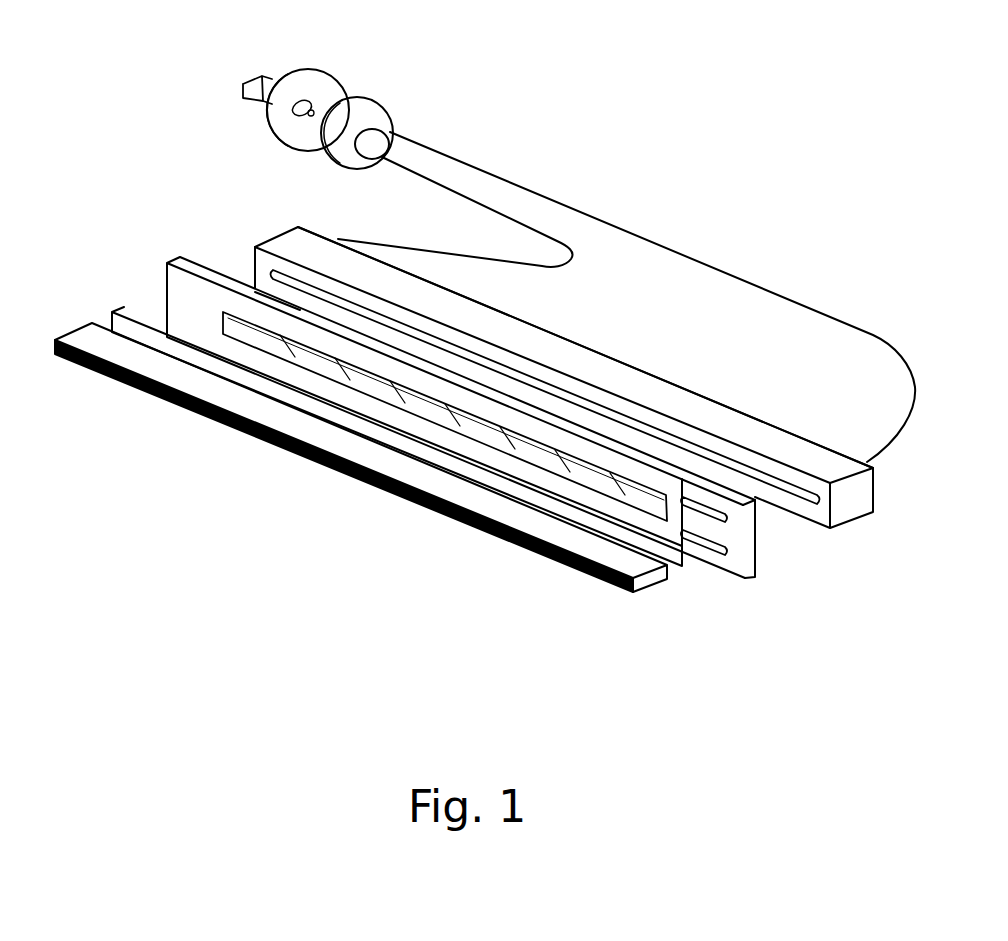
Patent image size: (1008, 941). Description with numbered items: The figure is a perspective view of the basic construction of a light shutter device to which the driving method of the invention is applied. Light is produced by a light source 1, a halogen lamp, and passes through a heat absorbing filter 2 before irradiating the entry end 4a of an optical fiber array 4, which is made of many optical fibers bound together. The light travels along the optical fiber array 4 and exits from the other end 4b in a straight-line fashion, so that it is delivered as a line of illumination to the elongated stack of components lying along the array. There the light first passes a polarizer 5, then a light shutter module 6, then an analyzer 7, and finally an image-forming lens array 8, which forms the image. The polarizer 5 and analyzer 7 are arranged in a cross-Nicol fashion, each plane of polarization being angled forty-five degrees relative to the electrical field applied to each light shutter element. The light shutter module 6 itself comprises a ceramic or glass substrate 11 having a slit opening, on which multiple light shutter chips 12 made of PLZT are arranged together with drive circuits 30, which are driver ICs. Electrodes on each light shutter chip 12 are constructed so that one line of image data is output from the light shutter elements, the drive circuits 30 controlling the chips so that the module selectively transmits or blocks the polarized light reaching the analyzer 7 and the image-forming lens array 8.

The light source 1 is at (297, 112).
The heat absorbing filter 2 is at (363, 100).
The optical fiber array 4 is at (720, 272).
The entry end 4a is at (370, 153).
The other end 4b is at (733, 419).
The polarizer 5 is at (800, 528).
The light shutter module 6 is at (755, 578).
The analyzer 7 is at (687, 567).
The image-forming lens array 8 is at (652, 590).
The substrate 11 is at (183, 295).
The light shutter chip 12 is at (172, 308).
The drive circuit 30 is at (257, 328).